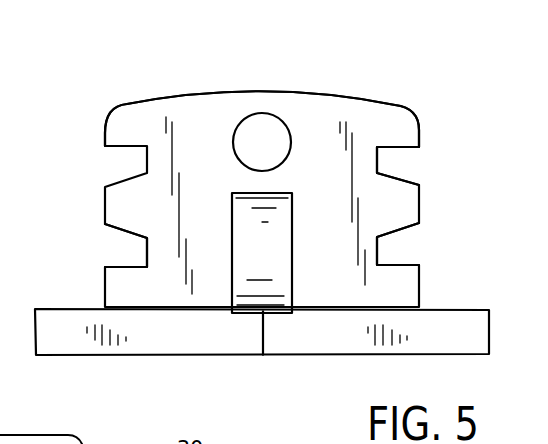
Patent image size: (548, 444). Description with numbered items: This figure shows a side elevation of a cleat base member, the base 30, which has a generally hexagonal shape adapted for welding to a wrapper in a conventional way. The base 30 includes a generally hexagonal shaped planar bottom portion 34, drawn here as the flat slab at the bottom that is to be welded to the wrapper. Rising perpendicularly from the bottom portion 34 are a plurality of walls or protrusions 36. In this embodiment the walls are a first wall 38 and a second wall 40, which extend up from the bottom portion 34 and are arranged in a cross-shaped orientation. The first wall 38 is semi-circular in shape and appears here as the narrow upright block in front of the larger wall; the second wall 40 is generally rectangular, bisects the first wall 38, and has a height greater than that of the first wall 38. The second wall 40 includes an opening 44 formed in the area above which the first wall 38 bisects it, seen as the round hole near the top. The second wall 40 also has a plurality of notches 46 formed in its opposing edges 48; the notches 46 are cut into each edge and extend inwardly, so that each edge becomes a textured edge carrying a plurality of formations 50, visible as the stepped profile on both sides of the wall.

The base 30 is at (439, 62).
The planar bottom portion 34 is at (452, 327).
The walls or protrusions 36 is at (324, 72).
The first wall 38 is at (293, 250).
The second wall 40 is at (190, 96).
The opening 44 is at (262, 130).
The notches 46 is at (418, 165).
The opposing edges 48 is at (100, 118).
The formations 50 is at (105, 207).